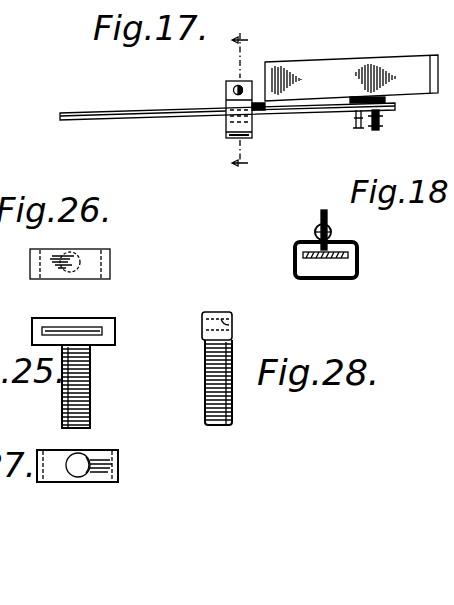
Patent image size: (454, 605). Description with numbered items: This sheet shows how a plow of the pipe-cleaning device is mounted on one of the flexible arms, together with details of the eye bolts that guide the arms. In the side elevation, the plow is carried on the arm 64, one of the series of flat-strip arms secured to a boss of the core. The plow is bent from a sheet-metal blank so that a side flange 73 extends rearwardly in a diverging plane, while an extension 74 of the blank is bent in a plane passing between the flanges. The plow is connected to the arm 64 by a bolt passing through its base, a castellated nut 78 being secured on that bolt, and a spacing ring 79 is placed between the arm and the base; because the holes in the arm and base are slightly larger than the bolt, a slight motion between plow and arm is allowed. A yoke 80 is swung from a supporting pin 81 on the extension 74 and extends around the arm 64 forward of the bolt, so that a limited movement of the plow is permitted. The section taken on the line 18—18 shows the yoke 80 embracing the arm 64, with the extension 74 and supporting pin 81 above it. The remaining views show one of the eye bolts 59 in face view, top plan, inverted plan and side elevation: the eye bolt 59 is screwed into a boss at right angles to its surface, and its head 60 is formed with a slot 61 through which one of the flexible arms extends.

In FIG. 17, the section line 18- 18 is at (230, 99).
In FIG. 26, the eye bolt 59 is at (73, 253).
In FIG. 25, the eye bolt 59 is at (91, 386).
In FIG. 27, the eye bolt 59 is at (78, 453).
In FIG. 28, the eye bolt 59 is at (205, 382).
In FIG. 26, the head 60 is at (111, 262).
In FIG. 25, the head 60 is at (70, 327).
In FIG. 27, the head 60 is at (118, 462).
In FIG. 28, the head 60 is at (217, 312).
In FIG. 26, the slot 61 is at (38, 268).
In FIG. 25, the slot 61 is at (100, 331).
In FIG. 28, the slot 61 is at (234, 322).
In FIG. 17, the arm 64 is at (115, 113).
In FIG. 18, the arm 64 is at (307, 258).
In FIG. 17, the side flange 73 is at (360, 66).
In FIG. 17, the extension 74 is at (193, 110).
In FIG. 18, the extension 74 is at (319, 220).
In FIG. 17, the castellated nut 78 is at (372, 132).
In FIG. 17, the spacing ring 79 is at (385, 102).
In FIG. 17, the yoke 80 is at (252, 128).
In FIG. 18, the yoke 80 is at (340, 279).
In FIG. 17, the supporting pin 81 is at (233, 88).
In FIG. 18, the supporting pin 81 is at (333, 233).